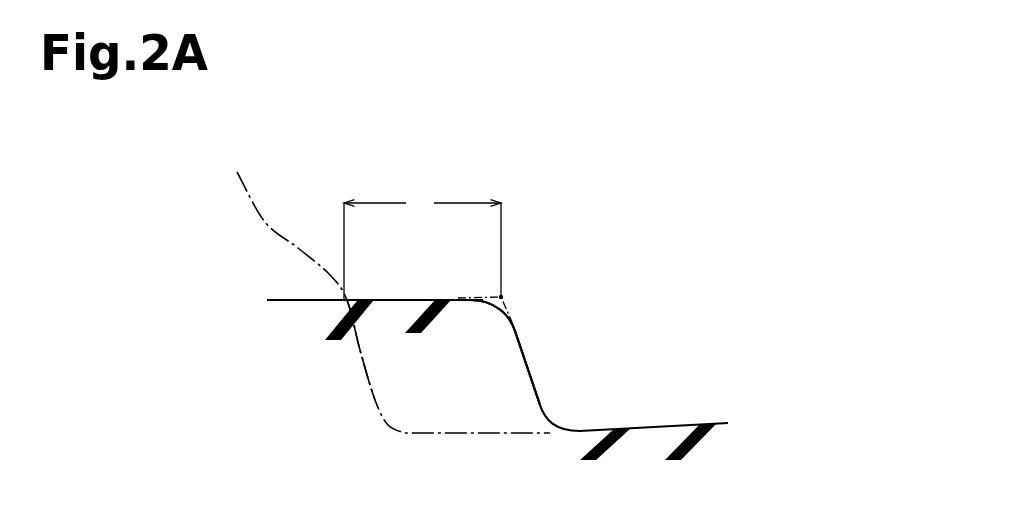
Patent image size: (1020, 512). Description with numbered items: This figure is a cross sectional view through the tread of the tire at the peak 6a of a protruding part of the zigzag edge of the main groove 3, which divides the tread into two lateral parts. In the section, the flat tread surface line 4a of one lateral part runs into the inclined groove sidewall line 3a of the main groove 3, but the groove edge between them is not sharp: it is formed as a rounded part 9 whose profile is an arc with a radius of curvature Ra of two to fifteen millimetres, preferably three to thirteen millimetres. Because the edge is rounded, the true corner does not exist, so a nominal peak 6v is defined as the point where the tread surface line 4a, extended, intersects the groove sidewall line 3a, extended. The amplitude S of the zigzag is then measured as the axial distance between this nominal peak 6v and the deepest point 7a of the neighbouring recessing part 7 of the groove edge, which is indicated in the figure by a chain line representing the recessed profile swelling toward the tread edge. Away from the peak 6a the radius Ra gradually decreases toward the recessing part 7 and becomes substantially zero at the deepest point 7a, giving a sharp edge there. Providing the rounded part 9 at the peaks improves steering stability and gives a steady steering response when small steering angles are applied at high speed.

The main groove 3 is at (684, 375).
The groove sidewall line 3a is at (524, 351).
The tread surface line 4a is at (297, 298).
The peak of the protruding part 6a is at (517, 305).
The nominal peak 6v is at (501, 297).
The recessing part 7 is at (382, 285).
The deepest point of the recessing part 7a is at (361, 350).
The rounded part 9 is at (483, 299).
The amplitude S is at (422, 243).
The radius of curvature Ra is at (495, 312).